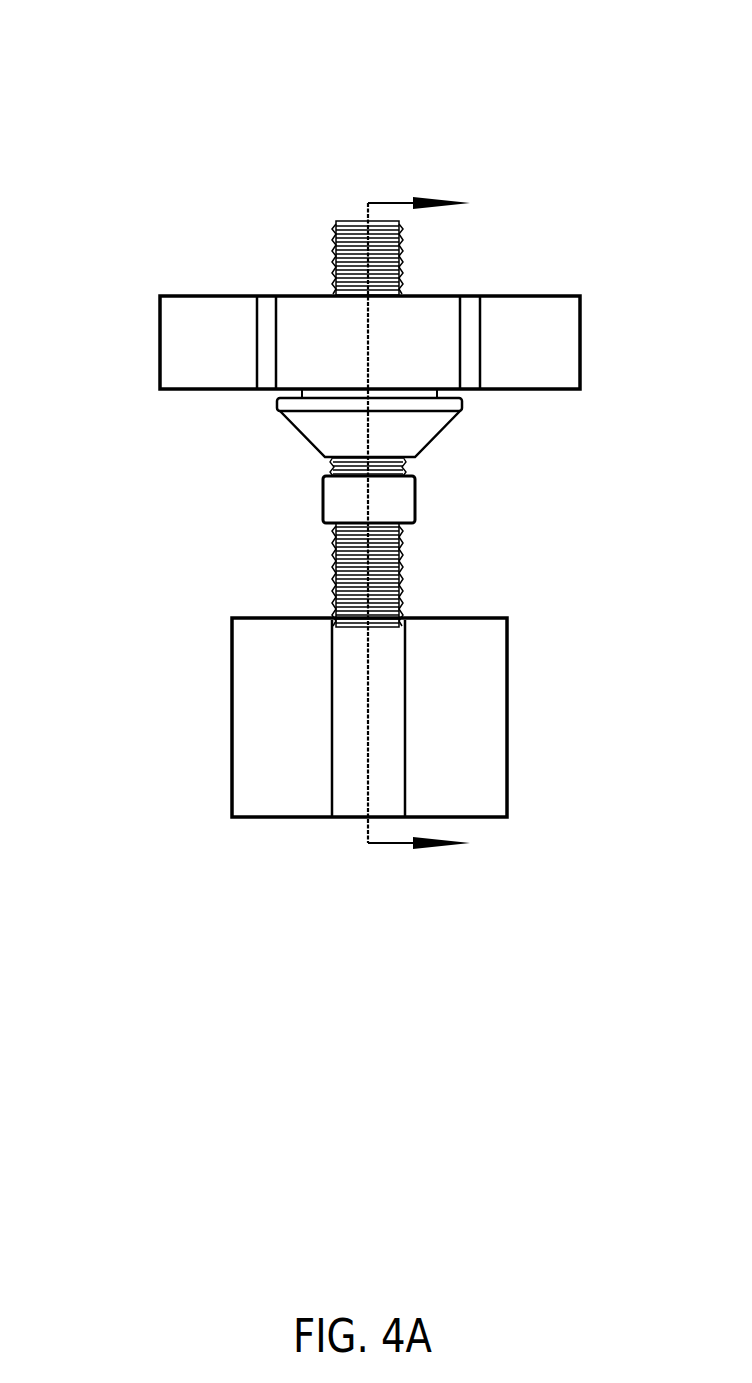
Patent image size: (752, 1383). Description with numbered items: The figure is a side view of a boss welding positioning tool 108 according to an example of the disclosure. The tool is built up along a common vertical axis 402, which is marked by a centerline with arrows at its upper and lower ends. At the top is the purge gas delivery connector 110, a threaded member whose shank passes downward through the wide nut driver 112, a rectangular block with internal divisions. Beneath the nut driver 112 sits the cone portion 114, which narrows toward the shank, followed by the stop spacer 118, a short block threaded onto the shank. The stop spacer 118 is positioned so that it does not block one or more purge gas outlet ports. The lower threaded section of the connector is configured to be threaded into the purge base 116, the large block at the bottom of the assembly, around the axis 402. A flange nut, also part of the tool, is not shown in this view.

The boss welding positioning tool 108 is at (180, 80).
The purge gas delivery connector 110 is at (347, 215).
The nut driver 112 is at (160, 363).
The cone portion 114 is at (302, 438).
The purge base 116 is at (232, 743).
The stop spacer 118 is at (415, 503).
The axis 402 is at (439, 519).